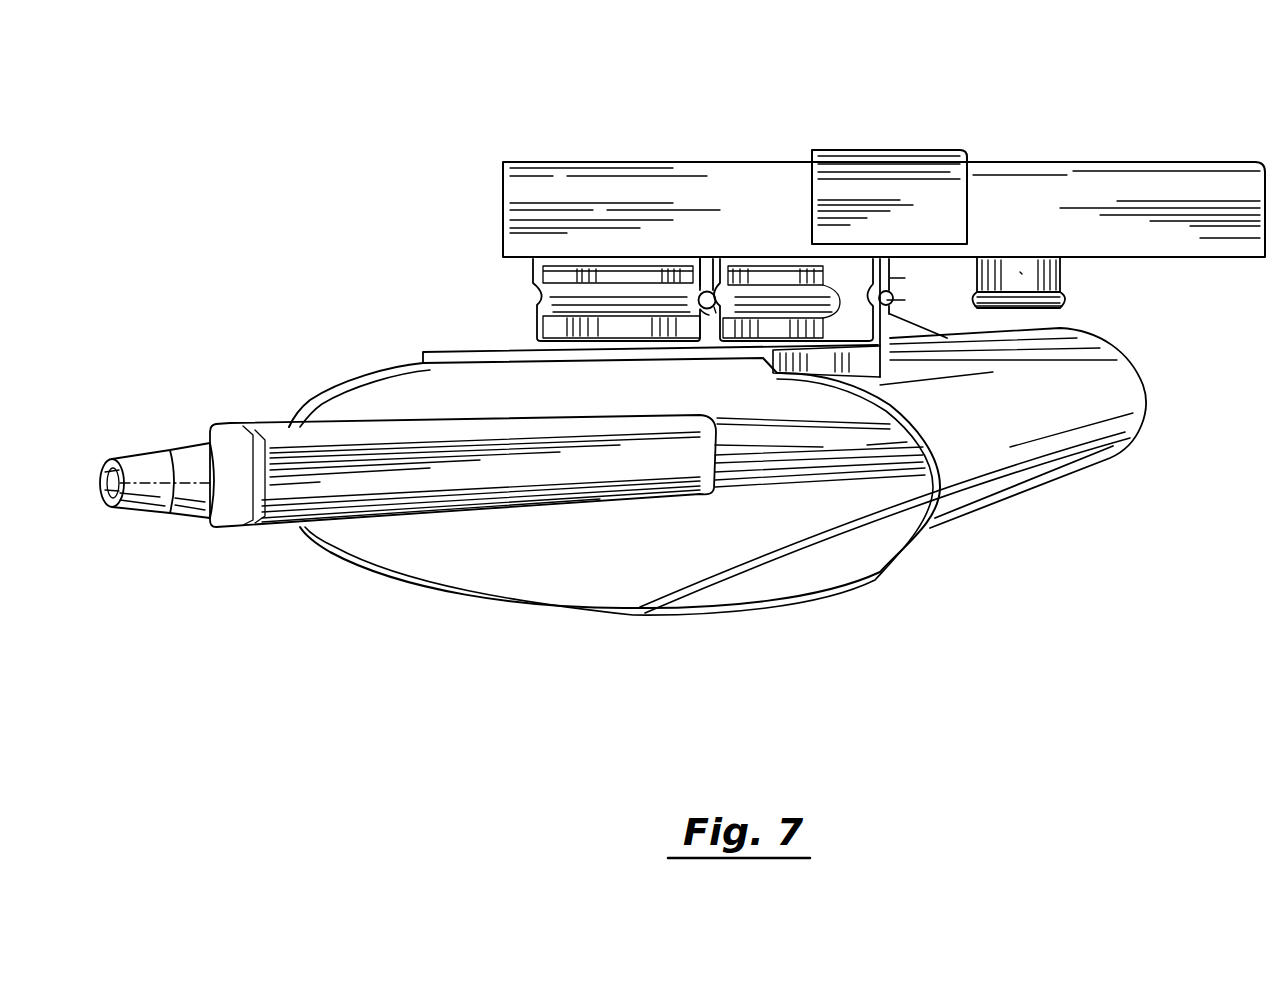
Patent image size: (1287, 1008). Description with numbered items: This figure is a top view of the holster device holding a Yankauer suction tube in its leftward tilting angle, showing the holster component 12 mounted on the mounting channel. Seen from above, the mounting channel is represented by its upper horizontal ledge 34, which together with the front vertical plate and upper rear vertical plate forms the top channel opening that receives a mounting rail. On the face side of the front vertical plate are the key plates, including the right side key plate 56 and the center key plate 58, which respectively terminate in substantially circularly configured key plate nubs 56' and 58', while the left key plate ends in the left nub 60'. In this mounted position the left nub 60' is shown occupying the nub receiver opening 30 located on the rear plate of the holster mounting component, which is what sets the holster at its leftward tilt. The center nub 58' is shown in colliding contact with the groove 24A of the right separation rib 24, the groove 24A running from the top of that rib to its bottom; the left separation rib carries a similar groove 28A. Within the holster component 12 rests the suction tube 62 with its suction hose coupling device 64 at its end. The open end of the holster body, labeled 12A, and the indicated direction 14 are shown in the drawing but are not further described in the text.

The holster component 12 is at (997, 503).
The open end of body 12A is at (735, 612).
The rotation direction 14 is at (600, 543).
The right separation rib 24 is at (850, 292).
The groove 24A is at (893, 308).
The groove 28A is at (533, 297).
The nub receiver opening 30 is at (728, 300).
The upper horizontal ledge 34 is at (1167, 207).
The right side key plate 56 is at (1073, 283).
The key plate nub 56' is at (1097, 330).
The center key plate 58 is at (960, 170).
The key plate nub 58' is at (993, 181).
The key plate nub 60' is at (647, 190).
The suction tube 62 is at (387, 520).
The suction hose coupling device 64 is at (170, 517).